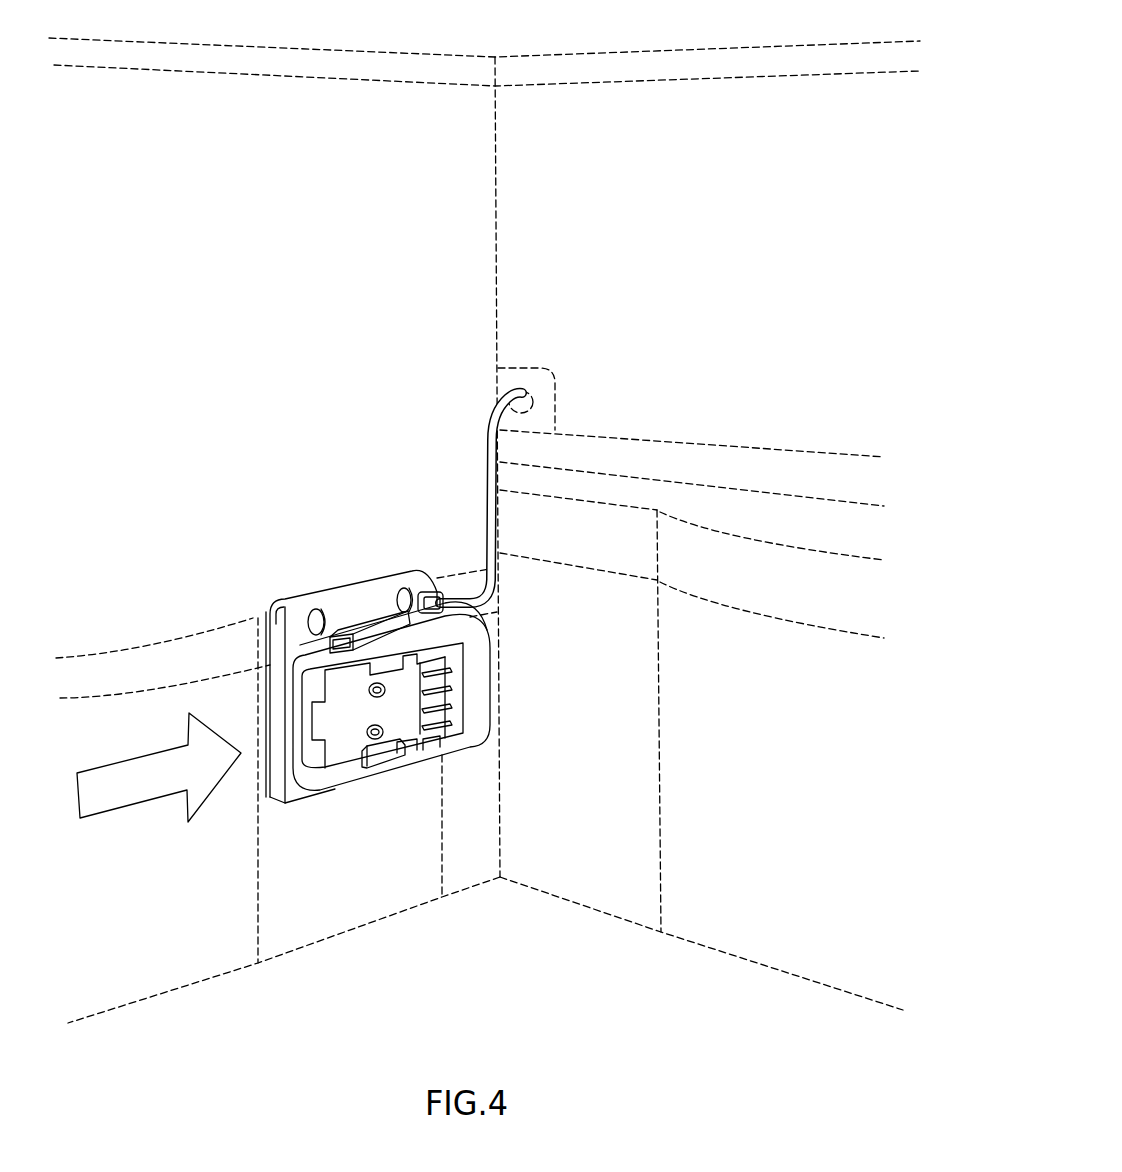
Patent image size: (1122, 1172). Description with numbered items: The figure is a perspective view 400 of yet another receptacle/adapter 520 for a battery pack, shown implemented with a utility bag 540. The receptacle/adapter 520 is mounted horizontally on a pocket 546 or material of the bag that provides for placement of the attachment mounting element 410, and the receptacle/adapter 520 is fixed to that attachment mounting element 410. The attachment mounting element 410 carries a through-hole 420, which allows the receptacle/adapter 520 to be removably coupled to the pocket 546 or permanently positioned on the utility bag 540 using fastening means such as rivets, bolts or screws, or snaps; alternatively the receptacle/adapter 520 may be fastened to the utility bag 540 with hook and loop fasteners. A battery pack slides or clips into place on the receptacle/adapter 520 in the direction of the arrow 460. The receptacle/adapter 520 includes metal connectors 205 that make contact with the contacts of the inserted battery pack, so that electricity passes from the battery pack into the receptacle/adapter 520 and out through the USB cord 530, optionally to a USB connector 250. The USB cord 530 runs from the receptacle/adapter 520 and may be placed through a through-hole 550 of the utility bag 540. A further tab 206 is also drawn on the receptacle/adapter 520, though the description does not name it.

The perspective view 400 is at (735, 254).
The utility bag 540 is at (607, 858).
The through-hole 550 is at (524, 389).
The USB cord 530 is at (490, 510).
The attachment mounting element 410 is at (292, 628).
The pocket 546 is at (253, 615).
The through-hole 420 is at (406, 588).
The receptacle/adapter 520 is at (472, 737).
The metal connectors 205 is at (450, 690).
The USB connector 250 is at (373, 627).
The retaining tab 206 is at (378, 757).
The arrow 460 is at (110, 762).